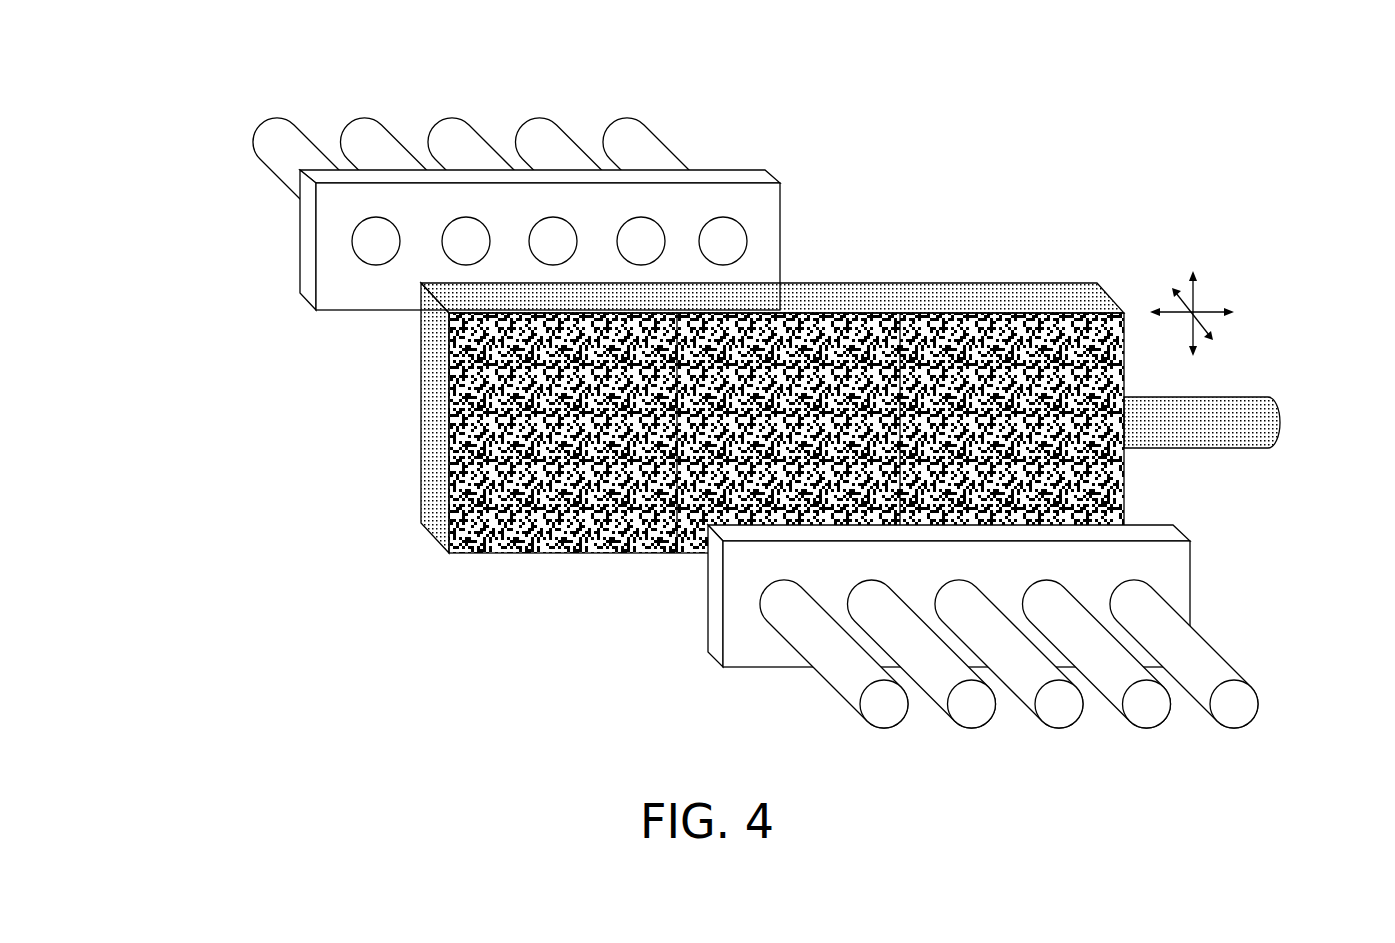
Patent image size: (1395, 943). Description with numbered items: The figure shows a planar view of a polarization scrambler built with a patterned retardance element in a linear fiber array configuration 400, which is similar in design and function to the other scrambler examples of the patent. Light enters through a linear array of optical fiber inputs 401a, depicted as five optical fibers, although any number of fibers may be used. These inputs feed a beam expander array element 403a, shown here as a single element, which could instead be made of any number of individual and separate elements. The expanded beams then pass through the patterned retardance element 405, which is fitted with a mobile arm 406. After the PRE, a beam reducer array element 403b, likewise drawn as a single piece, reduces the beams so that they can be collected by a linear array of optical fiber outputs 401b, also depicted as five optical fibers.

The linear fiber array configuration 400 is at (980, 125).
The linear array of optical fiber inputs 401a is at (297, 95).
The linear array of optical fiber outputs 401b is at (1255, 664).
The beam expander array element 403a is at (765, 180).
The beam reducer array element 403b is at (1185, 565).
The patterned retardance element (PRE) 405 is at (420, 502).
The mobile arm 406 is at (1272, 397).